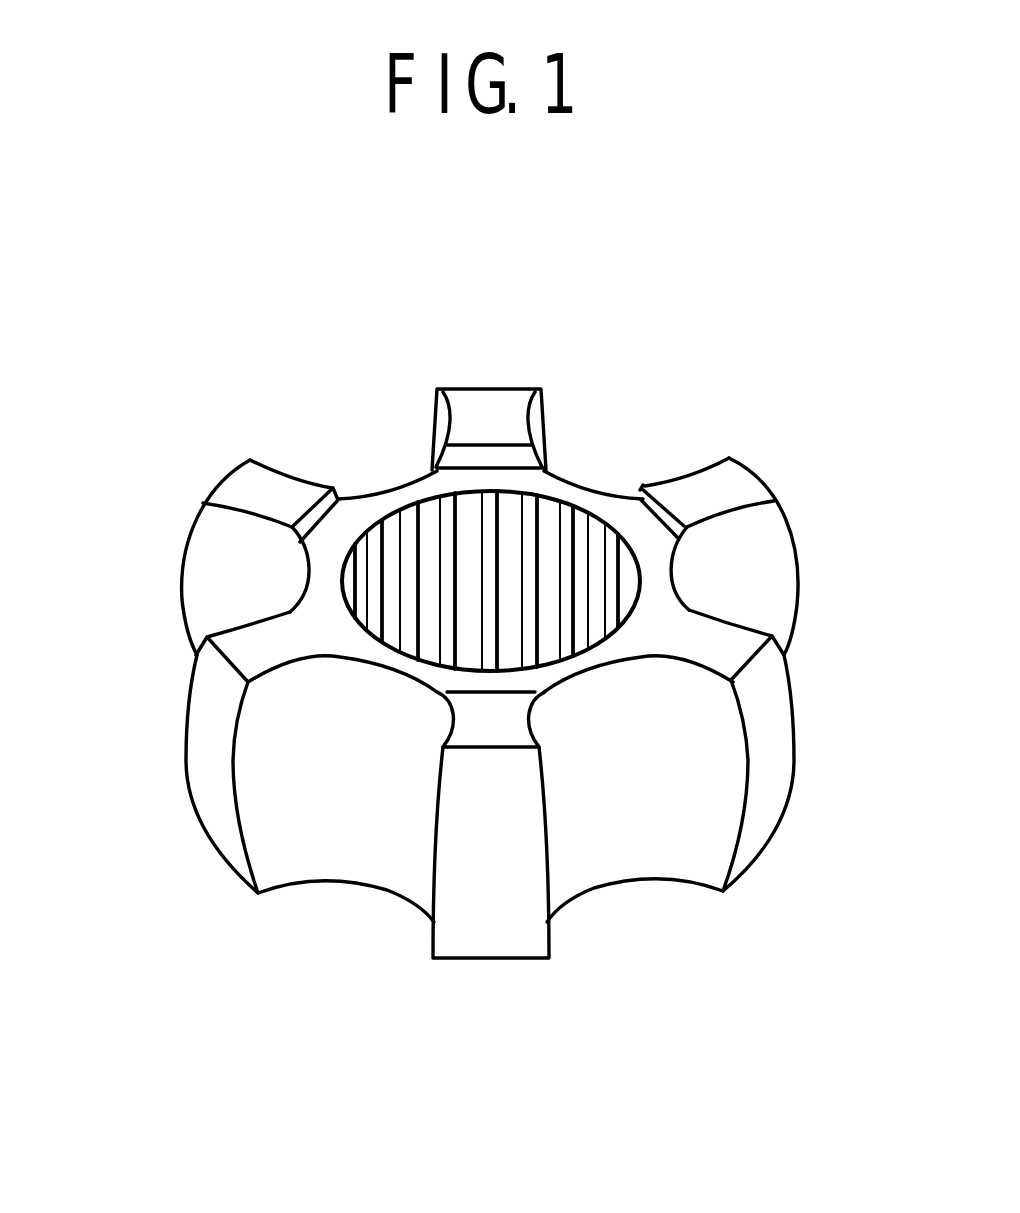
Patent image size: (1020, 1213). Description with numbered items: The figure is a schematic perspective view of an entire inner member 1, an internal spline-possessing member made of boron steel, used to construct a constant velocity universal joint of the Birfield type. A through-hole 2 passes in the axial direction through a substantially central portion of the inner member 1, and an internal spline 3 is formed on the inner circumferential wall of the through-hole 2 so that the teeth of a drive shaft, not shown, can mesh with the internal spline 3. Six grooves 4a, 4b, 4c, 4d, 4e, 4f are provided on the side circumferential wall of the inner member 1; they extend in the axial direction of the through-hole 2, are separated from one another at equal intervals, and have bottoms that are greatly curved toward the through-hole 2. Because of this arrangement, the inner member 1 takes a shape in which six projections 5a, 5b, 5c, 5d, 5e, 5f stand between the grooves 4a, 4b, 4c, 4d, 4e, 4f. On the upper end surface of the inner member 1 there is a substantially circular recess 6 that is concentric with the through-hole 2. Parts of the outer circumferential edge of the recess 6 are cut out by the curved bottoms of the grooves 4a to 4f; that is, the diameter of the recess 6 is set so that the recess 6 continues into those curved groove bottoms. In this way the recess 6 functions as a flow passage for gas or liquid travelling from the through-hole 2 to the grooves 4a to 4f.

The inner member 1 is at (196, 205).
The through-hole 2 is at (553, 527).
The internal spline 3 is at (415, 513).
The groove 4a is at (722, 757).
The groove 4b is at (750, 535).
The groove 4c is at (615, 492).
The groove 4d is at (303, 477).
The groove 4e is at (210, 573).
The groove 4f is at (287, 837).
The projection 5a is at (760, 830).
The projection 5b is at (738, 480).
The projection 5c is at (493, 400).
The projection 5d is at (242, 487).
The projection 5e is at (200, 757).
The projection 5f is at (483, 910).
The recess 6 is at (637, 640).